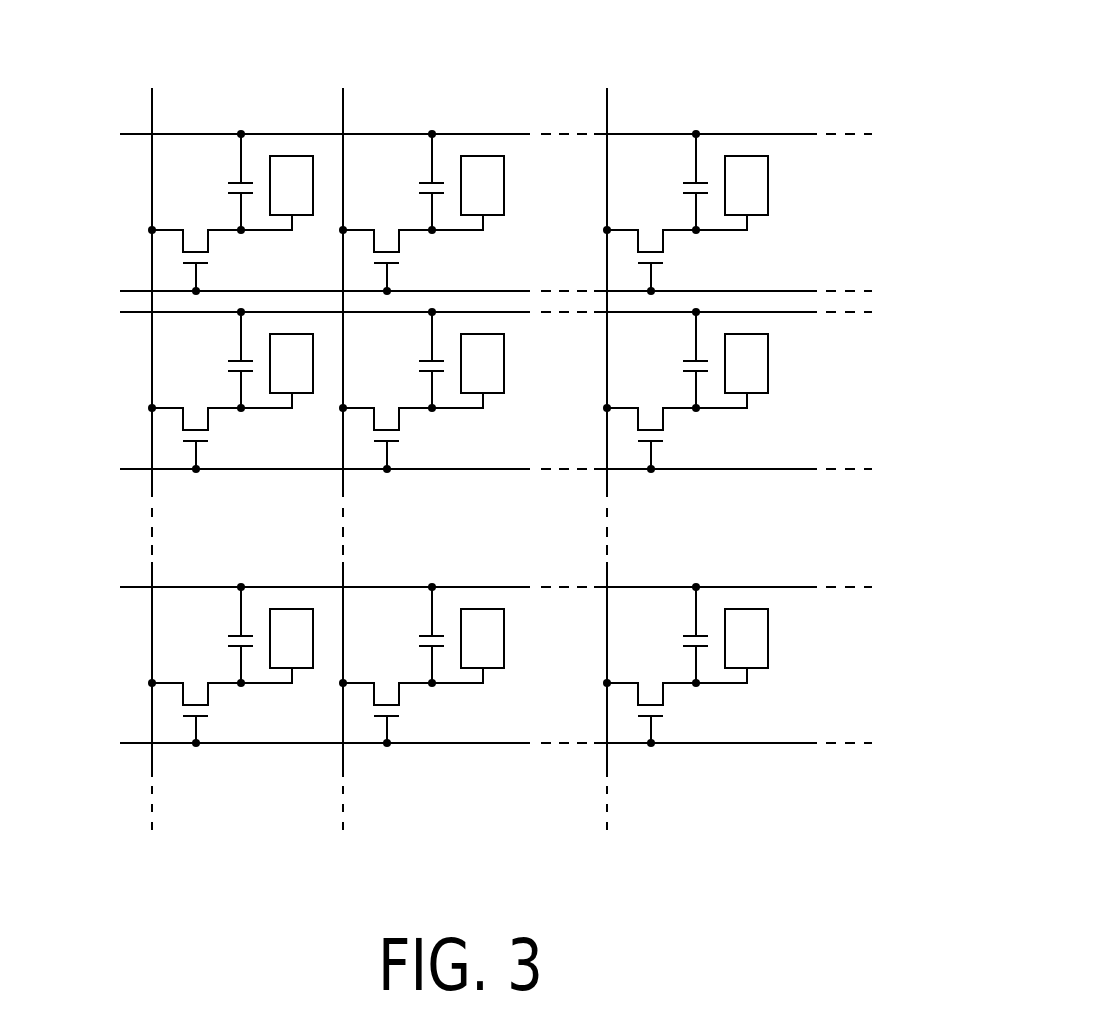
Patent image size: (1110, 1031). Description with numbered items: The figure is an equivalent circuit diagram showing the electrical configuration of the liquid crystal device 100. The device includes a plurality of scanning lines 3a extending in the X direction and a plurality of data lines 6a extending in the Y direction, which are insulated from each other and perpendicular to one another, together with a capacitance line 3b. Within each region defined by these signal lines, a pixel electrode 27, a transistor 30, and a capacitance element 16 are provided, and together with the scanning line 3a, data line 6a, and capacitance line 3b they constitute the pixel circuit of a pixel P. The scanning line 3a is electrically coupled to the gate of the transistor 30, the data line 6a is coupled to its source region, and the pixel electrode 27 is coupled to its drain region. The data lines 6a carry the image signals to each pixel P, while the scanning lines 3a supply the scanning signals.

The liquid crystal device 100 is at (740, 66).
The data line 6a is at (153, 100).
The capacitance line 3b is at (800, 133).
The scanning line 3a is at (800, 290).
The capacitance element 16 is at (225, 184).
The pixel electrode 27 is at (300, 217).
The transistor 30 is at (225, 258).
The pixel P is at (790, 188).